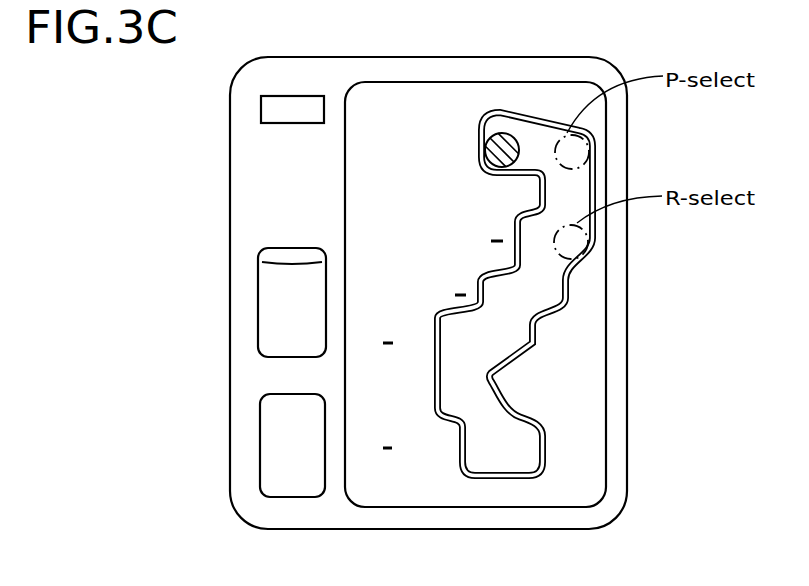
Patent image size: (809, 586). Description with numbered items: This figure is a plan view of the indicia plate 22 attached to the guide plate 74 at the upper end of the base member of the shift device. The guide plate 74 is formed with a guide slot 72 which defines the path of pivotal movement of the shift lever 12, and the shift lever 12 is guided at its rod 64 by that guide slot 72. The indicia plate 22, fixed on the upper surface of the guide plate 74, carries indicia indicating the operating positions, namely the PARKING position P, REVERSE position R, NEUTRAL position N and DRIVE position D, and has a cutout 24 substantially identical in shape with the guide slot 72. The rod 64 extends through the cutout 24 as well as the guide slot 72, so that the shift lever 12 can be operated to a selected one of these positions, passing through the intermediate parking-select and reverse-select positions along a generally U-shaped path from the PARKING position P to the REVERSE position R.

The guide plate 74 is at (331, 77).
The indicia plate 22 is at (443, 100).
The guide slot 72 is at (562, 294).
The cutout 24 is at (545, 458).
The shift lever 12 is at (526, 89).
The rod 64 is at (505, 137).